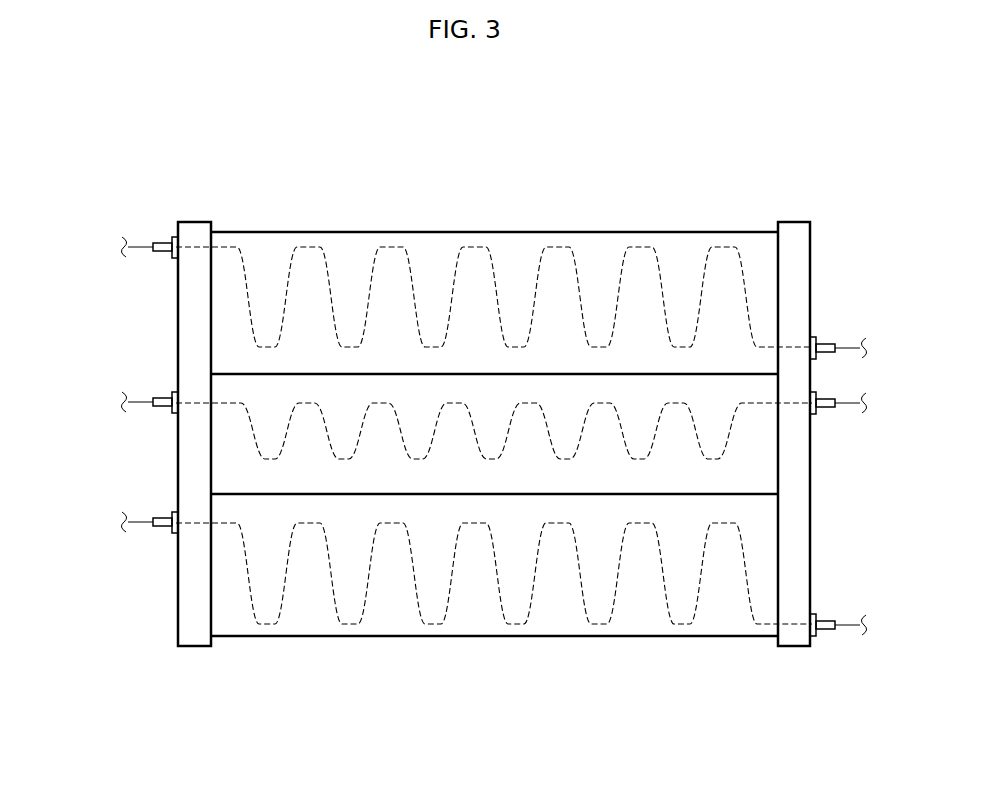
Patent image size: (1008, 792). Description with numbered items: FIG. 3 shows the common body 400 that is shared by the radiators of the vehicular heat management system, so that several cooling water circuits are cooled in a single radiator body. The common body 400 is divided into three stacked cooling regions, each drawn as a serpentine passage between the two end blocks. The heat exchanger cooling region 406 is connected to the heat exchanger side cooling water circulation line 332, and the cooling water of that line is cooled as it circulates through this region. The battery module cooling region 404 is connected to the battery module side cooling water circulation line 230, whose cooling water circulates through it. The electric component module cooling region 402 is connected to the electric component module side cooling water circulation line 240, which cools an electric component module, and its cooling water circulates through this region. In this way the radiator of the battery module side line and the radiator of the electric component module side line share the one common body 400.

The common body 400 is at (521, 416).
The electric component module cooling region 402 is at (397, 612).
The battery module cooling region 404 is at (530, 443).
The heat exchanger cooling region 406 is at (348, 257).
The heat exchanger side cooling water circulation line 332 is at (143, 245).
The battery module side cooling water circulation line 230 is at (143, 400).
The electric component module side cooling water circulation line 240 is at (143, 520).